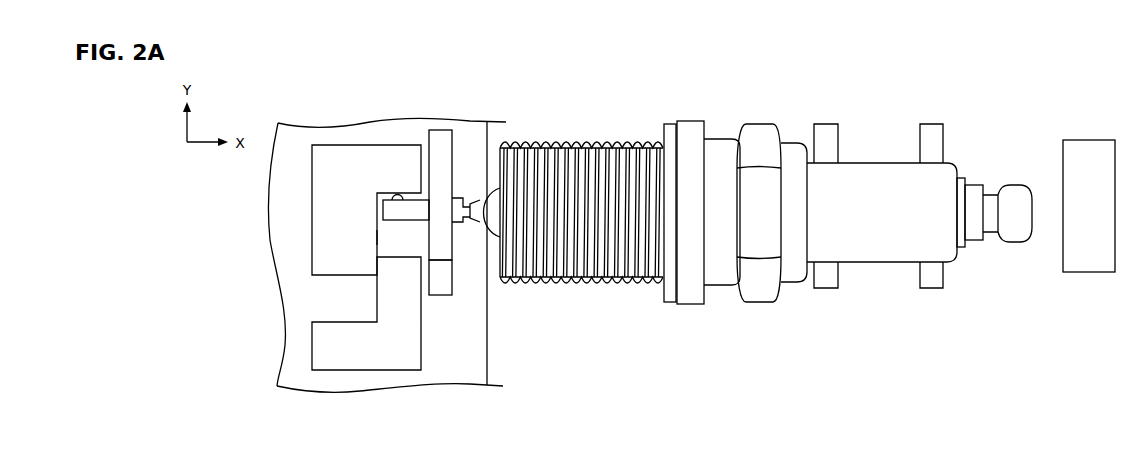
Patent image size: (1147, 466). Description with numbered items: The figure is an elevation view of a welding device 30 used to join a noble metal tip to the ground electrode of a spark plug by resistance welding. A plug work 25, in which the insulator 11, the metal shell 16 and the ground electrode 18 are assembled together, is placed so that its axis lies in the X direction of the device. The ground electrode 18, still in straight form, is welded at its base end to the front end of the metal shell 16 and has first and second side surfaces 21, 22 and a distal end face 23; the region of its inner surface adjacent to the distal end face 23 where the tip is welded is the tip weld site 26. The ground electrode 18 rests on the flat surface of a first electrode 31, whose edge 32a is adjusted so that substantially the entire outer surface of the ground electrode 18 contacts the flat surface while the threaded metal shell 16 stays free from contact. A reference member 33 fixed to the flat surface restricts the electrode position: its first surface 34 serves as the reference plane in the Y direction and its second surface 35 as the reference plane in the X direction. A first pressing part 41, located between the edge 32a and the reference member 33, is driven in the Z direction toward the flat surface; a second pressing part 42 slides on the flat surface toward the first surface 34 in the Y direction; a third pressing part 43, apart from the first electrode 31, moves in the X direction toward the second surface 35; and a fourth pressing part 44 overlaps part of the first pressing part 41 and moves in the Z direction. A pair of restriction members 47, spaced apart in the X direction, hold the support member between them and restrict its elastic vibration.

The insulator 11 is at (878, 177).
The metal shell 16 is at (693, 135).
The ground electrode 18 is at (459, 206).
The first side surface 21 is at (413, 195).
The second side surface 22 is at (418, 223).
The distal end face 23 is at (382, 212).
The plug work 25 is at (799, 119).
The tip weld site 26 is at (400, 215).
The welding device 30 is at (509, 114).
The first electrode 31 is at (480, 352).
The edge of the flat surface 32a is at (487, 318).
The reference member 33 is at (331, 155).
The first surface 34 is at (395, 193).
The second surface 35 is at (380, 237).
The first pressing part 41 is at (442, 283).
The second pressing part 42 is at (367, 363).
The third pressing part 43 is at (1085, 150).
The fourth pressing part 44 is at (437, 142).
The restriction members 47 is at (825, 280).